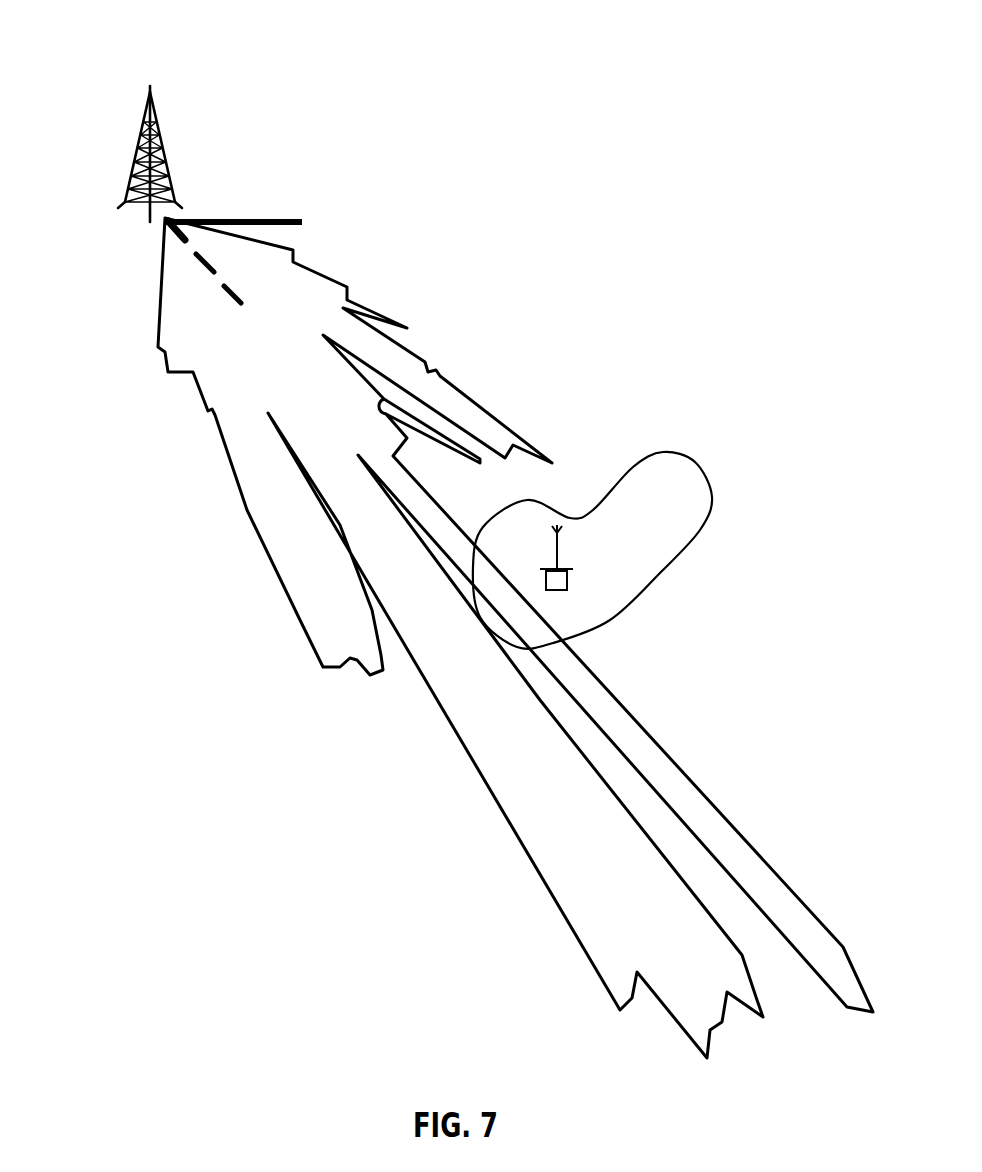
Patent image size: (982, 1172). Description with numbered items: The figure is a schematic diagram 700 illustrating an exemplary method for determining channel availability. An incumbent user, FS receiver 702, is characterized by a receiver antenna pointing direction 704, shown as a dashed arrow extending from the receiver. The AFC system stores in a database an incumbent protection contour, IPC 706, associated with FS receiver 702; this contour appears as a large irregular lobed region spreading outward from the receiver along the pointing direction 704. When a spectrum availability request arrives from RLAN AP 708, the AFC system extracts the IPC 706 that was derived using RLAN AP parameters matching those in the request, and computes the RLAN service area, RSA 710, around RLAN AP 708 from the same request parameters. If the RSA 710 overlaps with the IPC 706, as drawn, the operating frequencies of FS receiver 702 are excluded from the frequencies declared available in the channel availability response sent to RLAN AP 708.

The RLAN/FS coexistence scenario 700 is at (500, 88).
The FS receiver 702 is at (148, 72).
The receiver antenna pointing direction 704 is at (228, 272).
The IPC 706 is at (266, 555).
The RLAN AP 708 is at (620, 563).
The RSA 710 is at (635, 463).